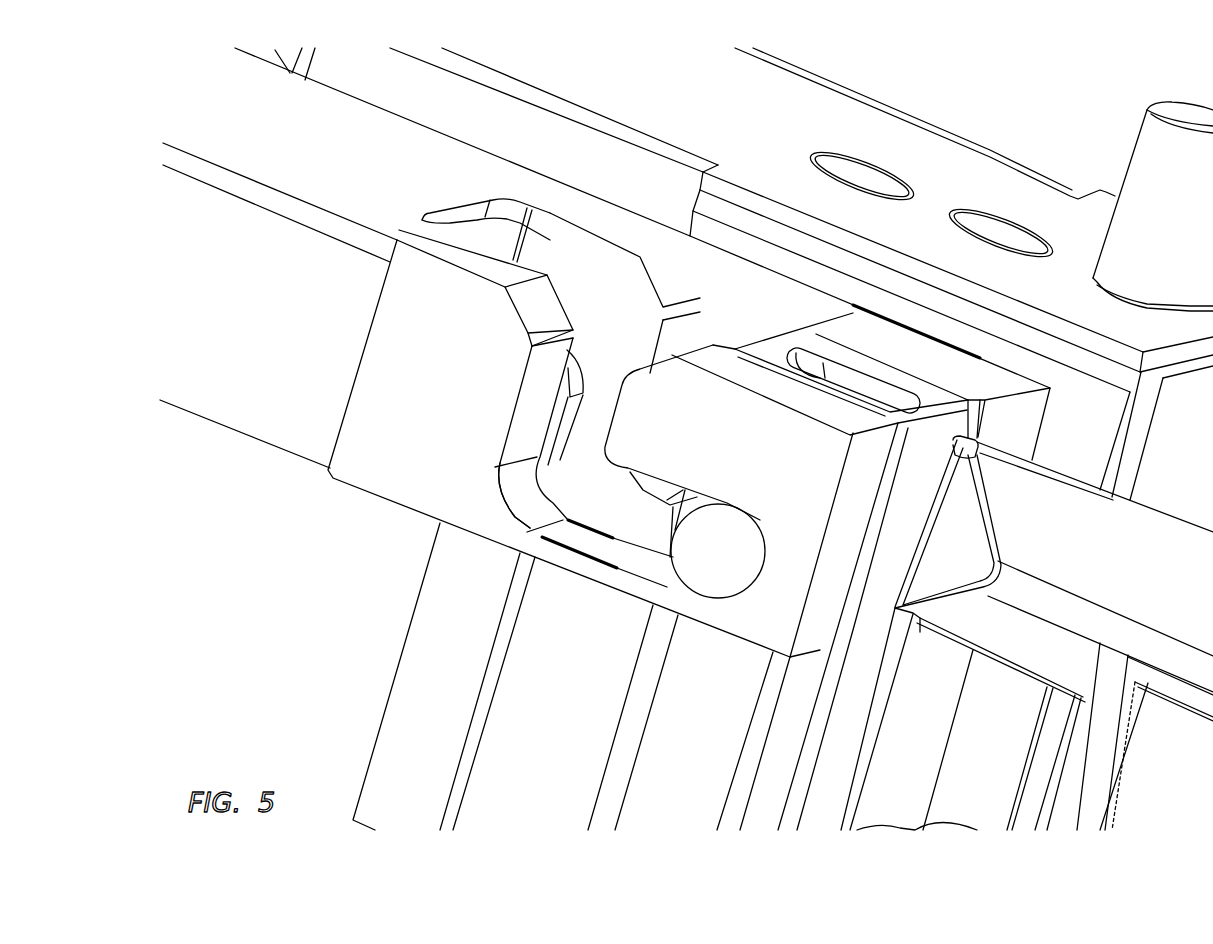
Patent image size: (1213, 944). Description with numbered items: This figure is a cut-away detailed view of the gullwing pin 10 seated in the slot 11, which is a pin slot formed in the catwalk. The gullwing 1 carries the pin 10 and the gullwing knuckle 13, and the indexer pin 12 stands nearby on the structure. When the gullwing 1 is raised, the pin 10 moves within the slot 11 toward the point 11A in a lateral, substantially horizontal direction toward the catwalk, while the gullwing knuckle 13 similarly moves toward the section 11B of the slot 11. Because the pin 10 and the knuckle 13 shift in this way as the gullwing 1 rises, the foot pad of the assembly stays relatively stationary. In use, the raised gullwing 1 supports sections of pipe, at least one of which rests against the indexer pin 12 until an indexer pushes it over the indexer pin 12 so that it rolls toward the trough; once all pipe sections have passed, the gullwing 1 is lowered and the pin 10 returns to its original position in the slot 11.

The gullwing 1 is at (1073, 557).
The gullwing pin 10 is at (827, 567).
The slot 11 is at (559, 413).
The point 11A is at (523, 502).
The section of slot 11B is at (490, 233).
The indexer pin 12 is at (1162, 252).
The gullwing knuckle 13 is at (797, 342).